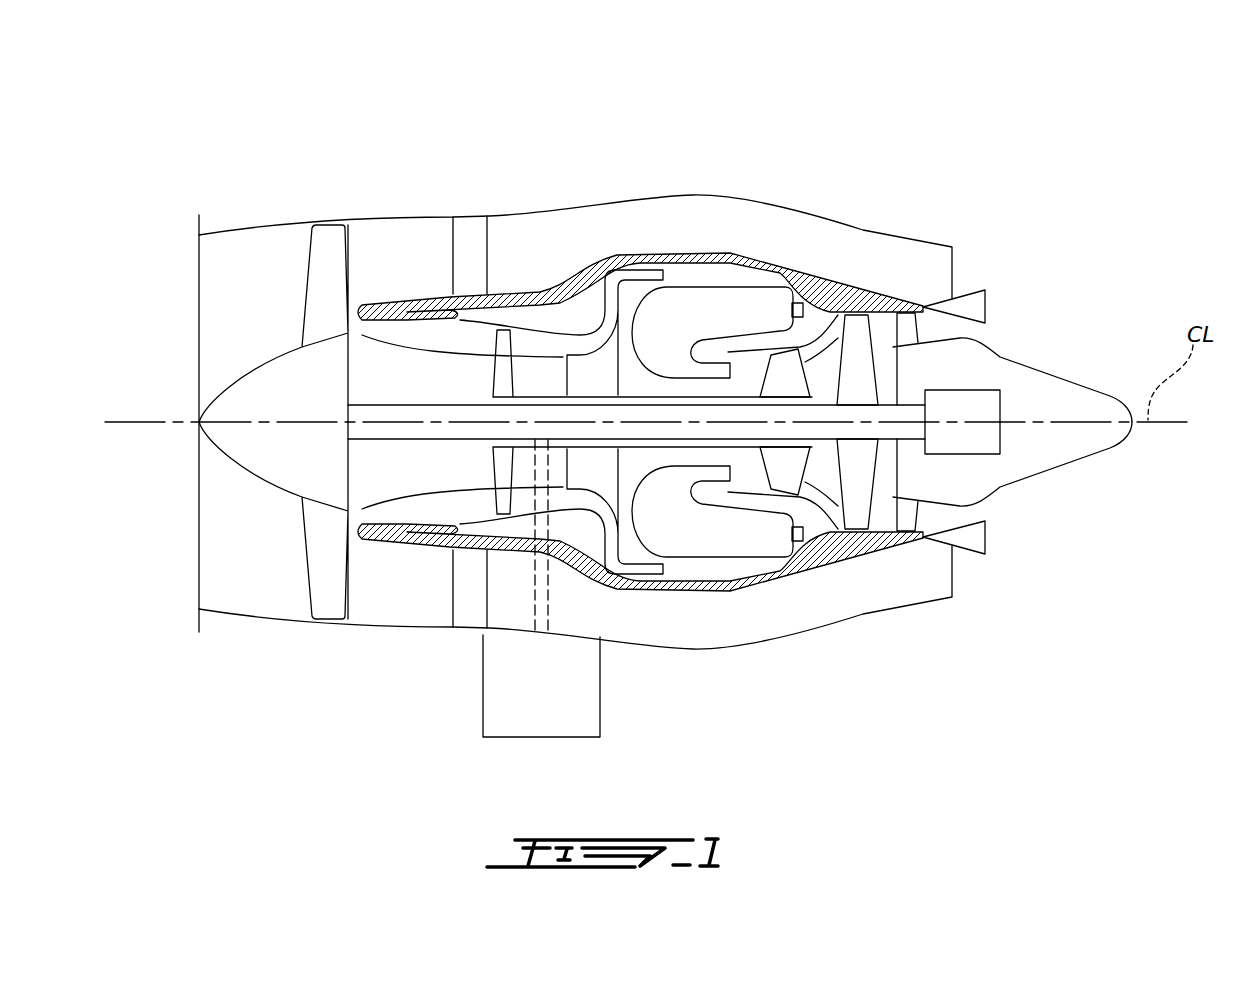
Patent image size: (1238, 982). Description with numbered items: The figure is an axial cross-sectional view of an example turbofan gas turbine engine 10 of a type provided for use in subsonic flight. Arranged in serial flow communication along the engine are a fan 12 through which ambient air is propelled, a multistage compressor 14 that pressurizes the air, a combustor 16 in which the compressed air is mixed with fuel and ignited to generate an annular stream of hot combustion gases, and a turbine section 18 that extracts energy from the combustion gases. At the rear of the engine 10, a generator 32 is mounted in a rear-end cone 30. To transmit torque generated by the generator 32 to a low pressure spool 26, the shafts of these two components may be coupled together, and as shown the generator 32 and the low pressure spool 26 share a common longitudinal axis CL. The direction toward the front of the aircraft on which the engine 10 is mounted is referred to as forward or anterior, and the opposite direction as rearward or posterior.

The gas turbine engine 10 is at (838, 156).
The fan 12 is at (323, 552).
The multistage compressor 14 is at (553, 347).
The combustor 16 is at (712, 303).
The turbine section 18 is at (822, 477).
The low pressure spool 26 is at (855, 510).
The rear-end cone 30 is at (1047, 368).
The generator 32 is at (977, 438).